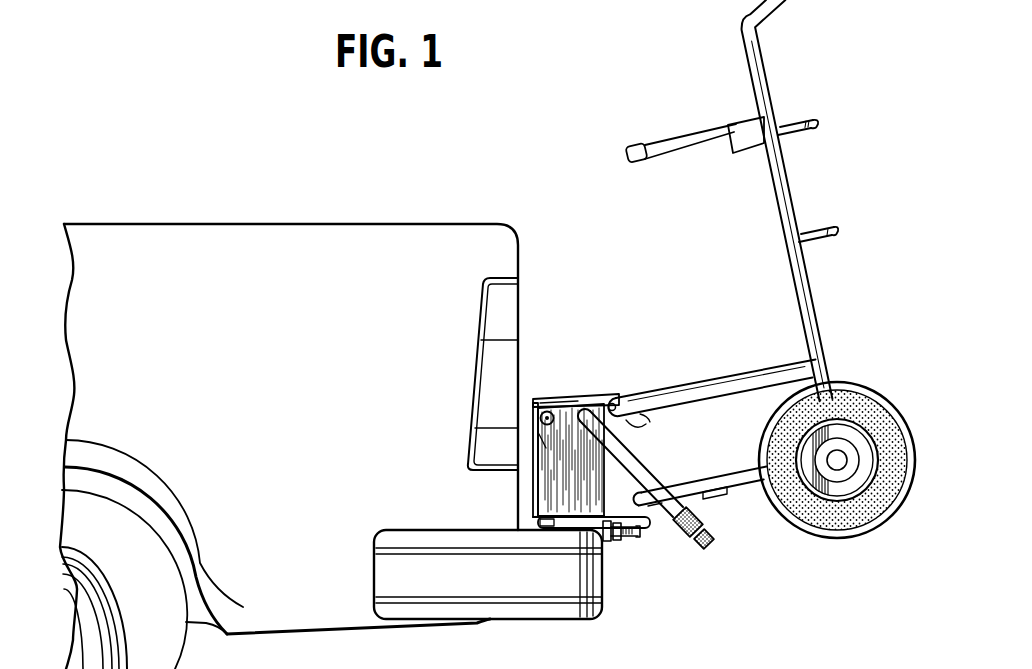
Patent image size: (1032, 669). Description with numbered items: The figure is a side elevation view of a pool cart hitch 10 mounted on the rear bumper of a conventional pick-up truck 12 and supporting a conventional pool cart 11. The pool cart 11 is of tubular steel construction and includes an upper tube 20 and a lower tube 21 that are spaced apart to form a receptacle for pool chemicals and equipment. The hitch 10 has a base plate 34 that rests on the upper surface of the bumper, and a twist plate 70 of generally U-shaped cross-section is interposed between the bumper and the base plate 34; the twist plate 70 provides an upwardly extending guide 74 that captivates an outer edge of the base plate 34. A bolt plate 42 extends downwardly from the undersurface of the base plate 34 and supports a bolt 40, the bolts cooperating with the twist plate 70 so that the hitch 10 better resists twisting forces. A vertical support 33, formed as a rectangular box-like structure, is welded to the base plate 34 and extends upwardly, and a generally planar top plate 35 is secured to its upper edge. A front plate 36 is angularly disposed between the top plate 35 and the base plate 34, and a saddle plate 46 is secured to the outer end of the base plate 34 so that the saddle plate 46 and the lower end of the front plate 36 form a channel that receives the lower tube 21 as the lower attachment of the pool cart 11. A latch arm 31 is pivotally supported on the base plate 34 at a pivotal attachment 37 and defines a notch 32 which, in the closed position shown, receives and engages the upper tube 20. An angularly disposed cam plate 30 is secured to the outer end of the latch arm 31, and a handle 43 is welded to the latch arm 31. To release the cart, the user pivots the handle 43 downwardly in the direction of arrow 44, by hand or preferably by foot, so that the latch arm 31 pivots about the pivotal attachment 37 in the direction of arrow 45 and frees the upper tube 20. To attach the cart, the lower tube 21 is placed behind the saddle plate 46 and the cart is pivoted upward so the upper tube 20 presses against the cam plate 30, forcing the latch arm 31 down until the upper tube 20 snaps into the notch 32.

The pool cart hitch 10 is at (604, 458).
The pool cart 11 is at (761, 272).
The pick-up truck 12 is at (425, 221).
The upper tube 20 is at (700, 386).
The lower tube 21 is at (736, 480).
The cam plate 30 is at (650, 418).
The latch arm 31 is at (638, 425).
The notch 32 is at (604, 400).
The vertical support 33 is at (542, 475).
The base plate 34 is at (518, 527).
The top plate 35 is at (560, 399).
The front plate 36 is at (606, 478).
The pivotal attachment 37 is at (545, 410).
The bolt 40 is at (622, 543).
The bolt plate 42 is at (610, 542).
The handle 43 is at (657, 482).
The arrow 44 is at (705, 542).
The arrow 45 is at (552, 444).
The saddle plate 46 is at (657, 514).
The twist plate 70 is at (564, 532).
The guide 74 is at (557, 523).